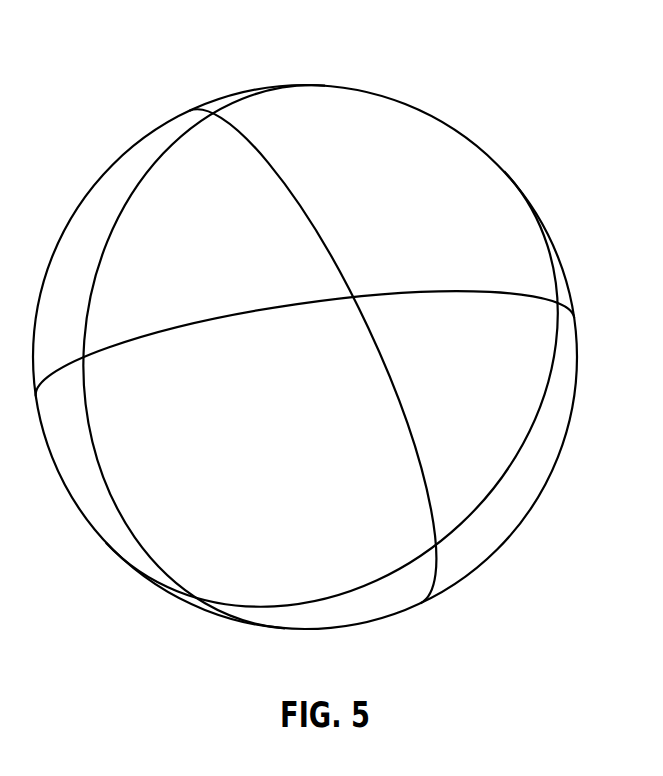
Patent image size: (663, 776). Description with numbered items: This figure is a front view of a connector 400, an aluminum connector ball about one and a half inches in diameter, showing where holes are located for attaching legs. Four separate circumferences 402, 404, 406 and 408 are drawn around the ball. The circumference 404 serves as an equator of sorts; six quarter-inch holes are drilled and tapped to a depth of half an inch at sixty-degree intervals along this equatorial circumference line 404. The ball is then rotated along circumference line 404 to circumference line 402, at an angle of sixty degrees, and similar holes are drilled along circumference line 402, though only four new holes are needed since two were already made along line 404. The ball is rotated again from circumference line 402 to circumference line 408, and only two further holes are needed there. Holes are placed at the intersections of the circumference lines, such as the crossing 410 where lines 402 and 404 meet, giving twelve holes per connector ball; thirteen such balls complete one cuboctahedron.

The connector 400 is at (522, 68).
The circumference line 402 is at (307, 212).
The equatorial circumference line 404 is at (447, 298).
The circumference 406 is at (510, 463).
The circumference line 408 is at (97, 275).
The intersection point 410 is at (353, 293).